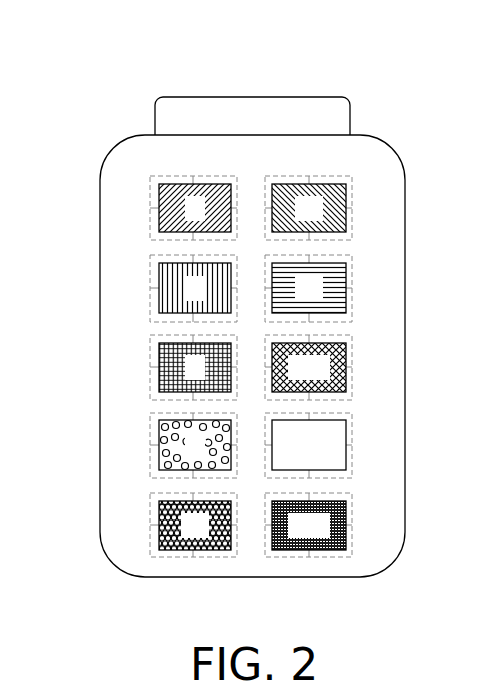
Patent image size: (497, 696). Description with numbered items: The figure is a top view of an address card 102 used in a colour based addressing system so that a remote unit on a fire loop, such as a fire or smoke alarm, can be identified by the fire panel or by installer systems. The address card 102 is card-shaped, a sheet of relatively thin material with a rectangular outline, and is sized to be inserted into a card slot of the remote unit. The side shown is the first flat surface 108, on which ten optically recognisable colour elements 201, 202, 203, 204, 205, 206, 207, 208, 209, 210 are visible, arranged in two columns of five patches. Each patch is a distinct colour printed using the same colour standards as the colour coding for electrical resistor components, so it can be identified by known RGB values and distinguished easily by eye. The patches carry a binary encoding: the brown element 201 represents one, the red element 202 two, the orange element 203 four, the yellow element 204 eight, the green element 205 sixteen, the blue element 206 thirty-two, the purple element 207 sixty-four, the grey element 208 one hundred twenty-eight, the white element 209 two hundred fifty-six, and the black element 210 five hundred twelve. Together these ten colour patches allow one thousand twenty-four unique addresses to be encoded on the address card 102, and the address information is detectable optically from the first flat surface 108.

The address card 102 is at (87, 93).
The first flat surface 108 is at (133, 555).
The optically recognisable colour element (brown) 201 is at (160, 200).
The optically recognisable colour element (red) 202 is at (160, 282).
The optically recognisable colour element (orange) 203 is at (160, 381).
The optically recognisable colour element (yellow) 204 is at (160, 447).
The optically recognisable colour element (green) 205 is at (160, 538).
The optically recognisable colour element (blue) 206 is at (325, 209).
The optically recognisable colour element (purple) 207 is at (337, 284).
The optically recognisable colour element (grey) 208 is at (345, 366).
The optically recognisable colour element (white) 209 is at (337, 444).
The optically recognisable colour element (black) 210 is at (338, 537).